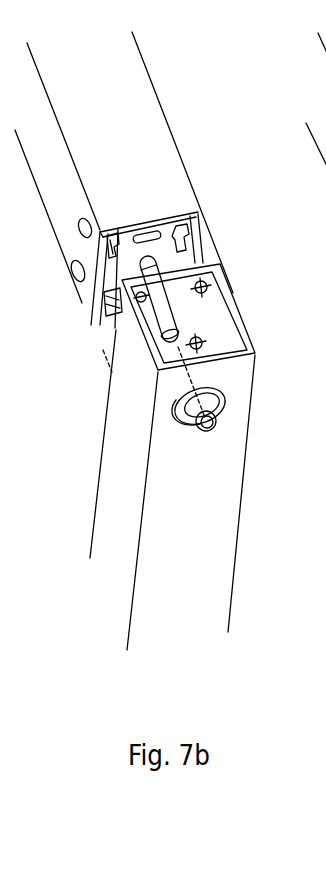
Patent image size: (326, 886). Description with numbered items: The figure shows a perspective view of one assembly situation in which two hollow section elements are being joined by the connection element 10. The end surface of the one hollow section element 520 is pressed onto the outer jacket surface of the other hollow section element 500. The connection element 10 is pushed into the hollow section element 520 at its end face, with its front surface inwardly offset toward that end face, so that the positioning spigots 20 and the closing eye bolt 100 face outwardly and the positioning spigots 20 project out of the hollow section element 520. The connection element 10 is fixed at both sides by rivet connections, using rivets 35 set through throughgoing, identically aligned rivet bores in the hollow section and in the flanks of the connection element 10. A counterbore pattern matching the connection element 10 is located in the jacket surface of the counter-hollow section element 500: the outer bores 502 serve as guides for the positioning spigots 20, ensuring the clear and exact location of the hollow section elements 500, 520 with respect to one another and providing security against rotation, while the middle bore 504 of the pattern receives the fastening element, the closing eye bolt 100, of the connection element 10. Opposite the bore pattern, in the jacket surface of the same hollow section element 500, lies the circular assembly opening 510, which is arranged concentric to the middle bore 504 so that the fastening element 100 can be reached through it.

The connection element 10 is at (167, 257).
The positioning spigots 20 is at (121, 233).
The rivets 35 is at (81, 222).
The closing eye bolt 100 is at (168, 316).
The hollow section element 500 is at (222, 545).
The outer bores 502 is at (203, 282).
The middle bore 504 is at (138, 327).
The circular assembly opening 510 is at (183, 423).
The hollow section element 520 is at (150, 128).